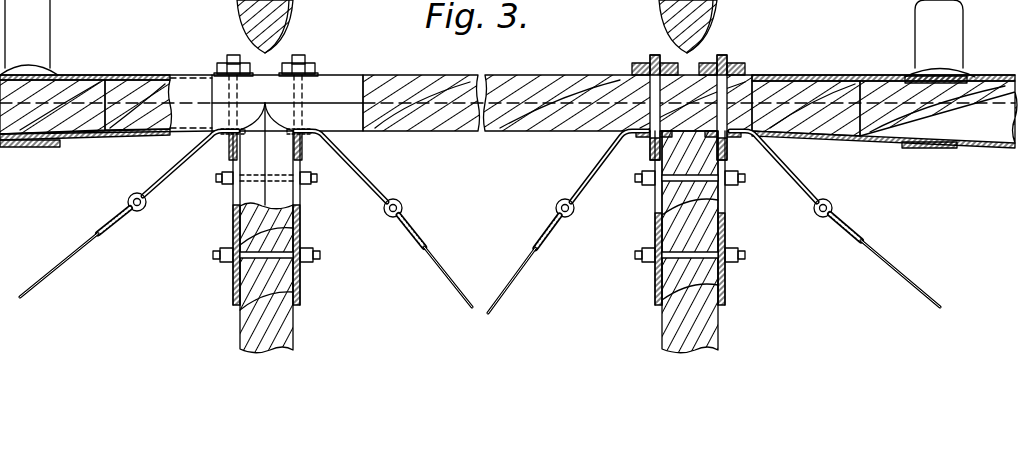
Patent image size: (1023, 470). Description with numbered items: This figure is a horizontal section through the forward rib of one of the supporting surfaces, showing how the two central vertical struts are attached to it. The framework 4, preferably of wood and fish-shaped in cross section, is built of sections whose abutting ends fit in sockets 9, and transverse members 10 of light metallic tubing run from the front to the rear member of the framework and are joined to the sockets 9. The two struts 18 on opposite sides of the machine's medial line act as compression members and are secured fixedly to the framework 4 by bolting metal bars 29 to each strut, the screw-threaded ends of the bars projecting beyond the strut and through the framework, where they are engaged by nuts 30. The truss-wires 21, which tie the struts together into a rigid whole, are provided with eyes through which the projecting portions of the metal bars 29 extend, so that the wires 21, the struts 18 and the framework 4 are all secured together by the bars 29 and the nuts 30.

The framework 4 is at (452, 76).
The socket 9 is at (111, 75).
The transverse member 10 is at (45, 34).
The strut 18 is at (292, 333).
The truss-wire 21 is at (66, 263).
The metal bar 29 is at (228, 237).
The nut 30 is at (225, 64).